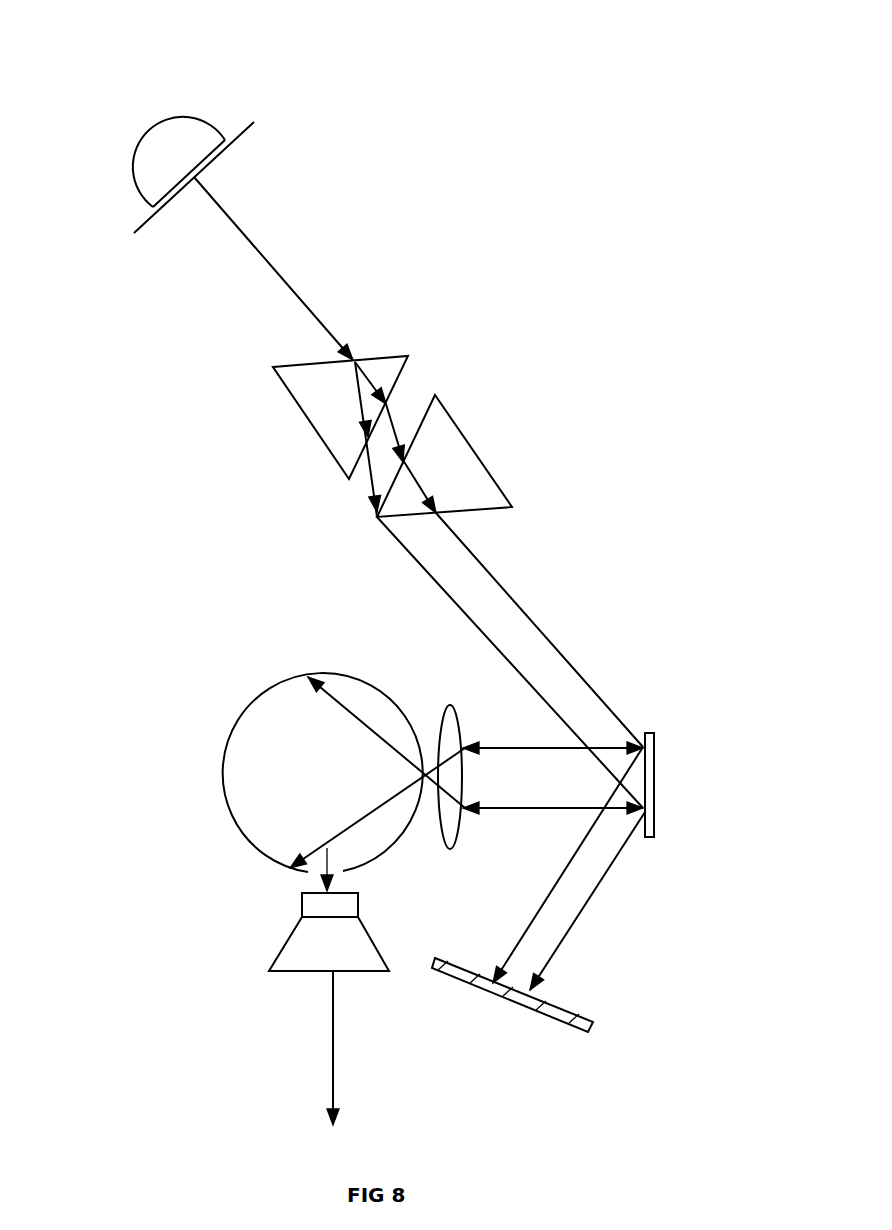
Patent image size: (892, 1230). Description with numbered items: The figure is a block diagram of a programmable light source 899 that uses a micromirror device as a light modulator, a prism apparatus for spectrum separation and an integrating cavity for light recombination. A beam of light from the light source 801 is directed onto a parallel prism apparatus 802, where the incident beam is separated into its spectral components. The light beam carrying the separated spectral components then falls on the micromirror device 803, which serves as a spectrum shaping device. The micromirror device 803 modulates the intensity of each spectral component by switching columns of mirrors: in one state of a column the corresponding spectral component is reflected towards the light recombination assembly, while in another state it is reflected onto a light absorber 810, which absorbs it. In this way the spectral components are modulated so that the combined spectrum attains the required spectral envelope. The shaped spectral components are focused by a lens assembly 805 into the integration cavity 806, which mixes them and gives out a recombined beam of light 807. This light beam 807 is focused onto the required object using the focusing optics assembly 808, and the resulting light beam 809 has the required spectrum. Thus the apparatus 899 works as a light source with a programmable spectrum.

The programmable light source 899 is at (262, 48).
The light source 801 is at (139, 177).
The parallel prism apparatus 802 is at (454, 423).
The micromirror device 803 is at (655, 786).
The lens assembly 805 is at (458, 717).
The integration cavity 806 is at (223, 760).
The recombined beam of light 807 is at (331, 866).
The focusing optics assembly 808 is at (282, 944).
The light beam 809 is at (337, 1060).
The light absorber 810 is at (579, 1027).